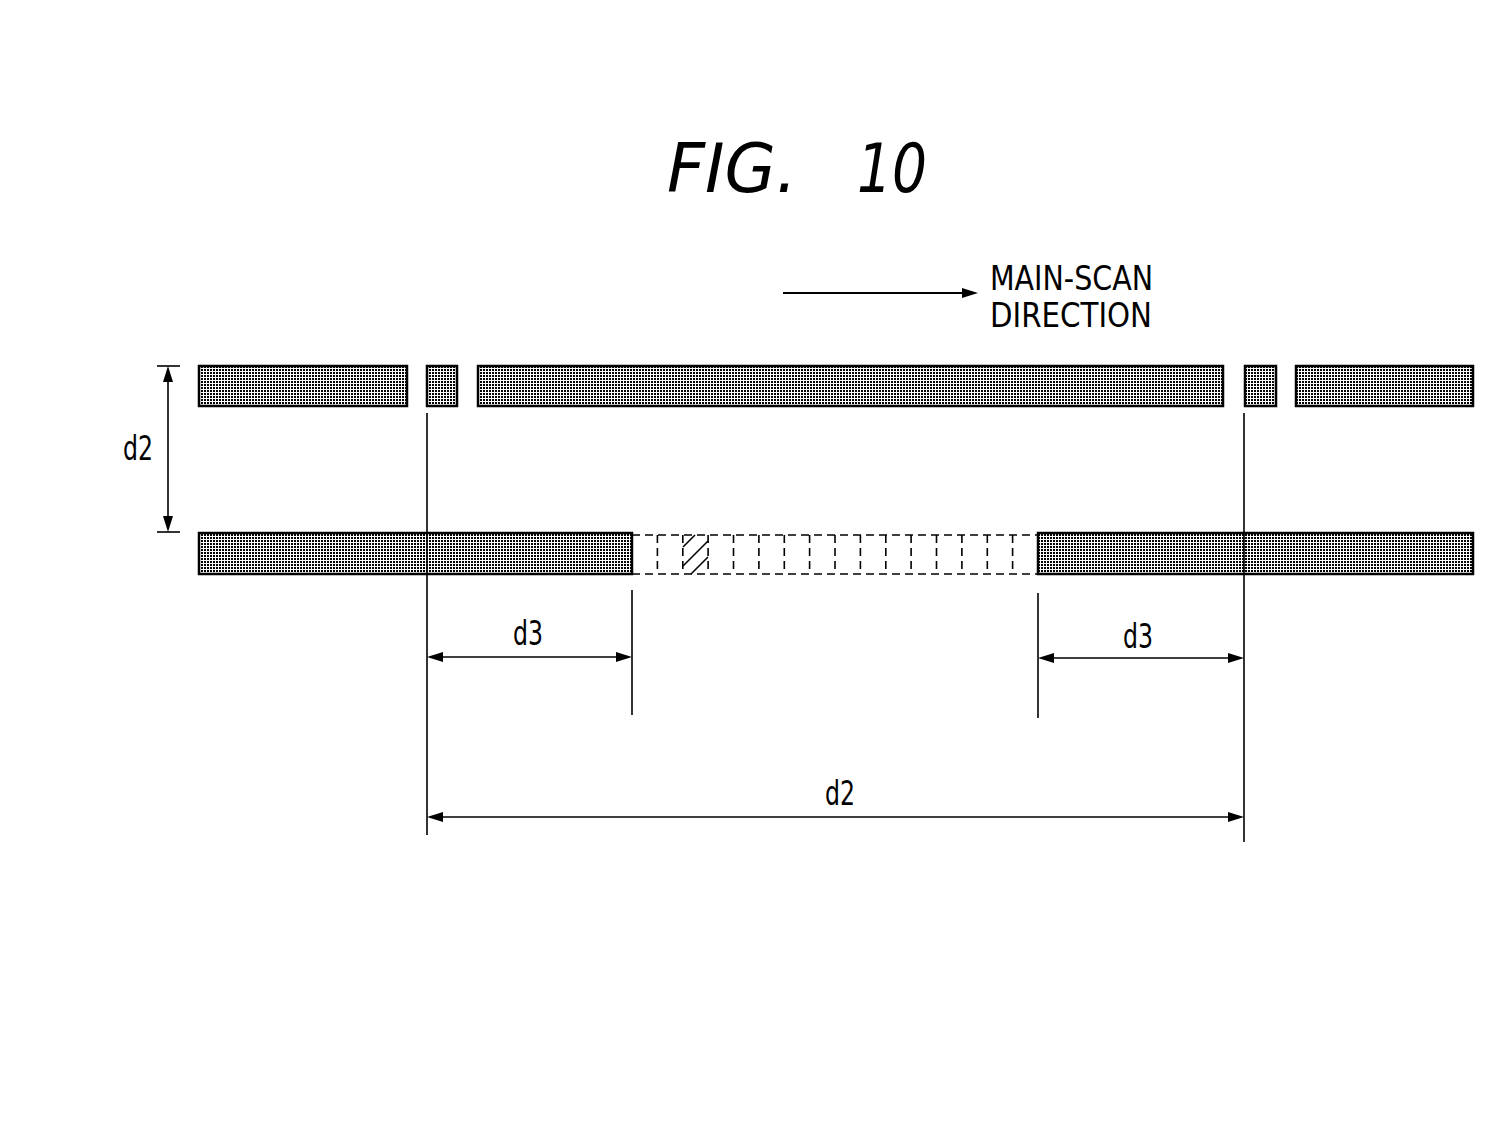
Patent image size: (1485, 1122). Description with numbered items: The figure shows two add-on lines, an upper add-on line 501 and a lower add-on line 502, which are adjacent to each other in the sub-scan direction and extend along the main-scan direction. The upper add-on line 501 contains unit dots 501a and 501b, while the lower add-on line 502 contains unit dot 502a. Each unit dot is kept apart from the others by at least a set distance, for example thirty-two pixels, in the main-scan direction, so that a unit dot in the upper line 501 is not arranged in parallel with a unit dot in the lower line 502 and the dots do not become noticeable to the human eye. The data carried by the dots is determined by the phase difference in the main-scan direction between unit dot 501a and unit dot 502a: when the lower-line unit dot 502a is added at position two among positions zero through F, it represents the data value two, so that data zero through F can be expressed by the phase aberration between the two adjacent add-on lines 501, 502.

The upper add-on line 501 is at (345, 364).
The unit dot 501a is at (443, 364).
The unit dot 501b is at (1283, 370).
The lower add-on line 502 is at (836, 579).
The unit dot 502a is at (835, 590).